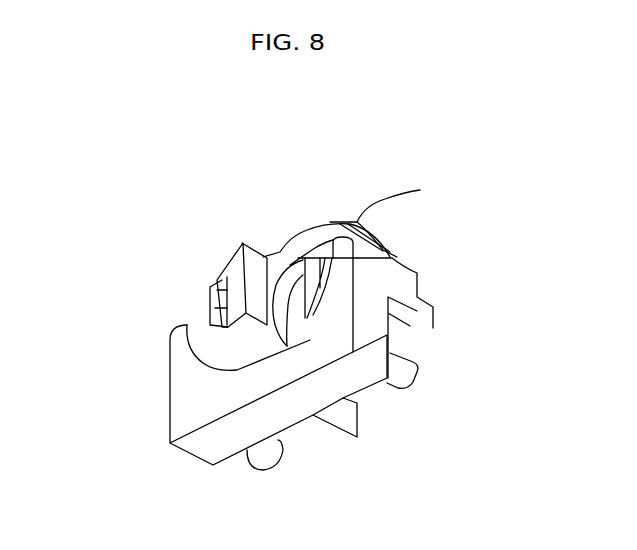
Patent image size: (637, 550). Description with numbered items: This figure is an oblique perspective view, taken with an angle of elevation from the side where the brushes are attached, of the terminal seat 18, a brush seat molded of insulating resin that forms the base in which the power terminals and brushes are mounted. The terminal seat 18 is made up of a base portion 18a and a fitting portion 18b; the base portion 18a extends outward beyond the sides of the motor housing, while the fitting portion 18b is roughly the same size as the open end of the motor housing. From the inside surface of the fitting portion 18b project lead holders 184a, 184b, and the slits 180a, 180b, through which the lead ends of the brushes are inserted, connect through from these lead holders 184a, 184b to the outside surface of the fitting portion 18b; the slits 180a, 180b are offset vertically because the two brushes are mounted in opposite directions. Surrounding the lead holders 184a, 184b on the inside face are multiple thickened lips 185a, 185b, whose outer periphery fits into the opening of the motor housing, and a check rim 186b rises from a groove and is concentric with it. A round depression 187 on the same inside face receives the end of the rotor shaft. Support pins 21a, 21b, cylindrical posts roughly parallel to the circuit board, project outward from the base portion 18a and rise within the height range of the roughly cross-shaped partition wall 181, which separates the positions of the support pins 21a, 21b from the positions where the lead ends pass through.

The terminal seat 18 is at (155, 432).
The base portion 18a is at (181, 393).
The fitting portion 18b is at (263, 257).
The slit 180a is at (220, 278).
The slit 180b is at (393, 257).
The partition wall 181 is at (329, 438).
The lead holder 184a is at (215, 308).
The lead holder 184b is at (331, 222).
The thickened lip 185a is at (299, 228).
The thickened lip 185b is at (217, 290).
The check rim 186b is at (383, 199).
The round depression 187 is at (243, 243).
The support pin 21a is at (420, 381).
The support pin 21b is at (258, 452).